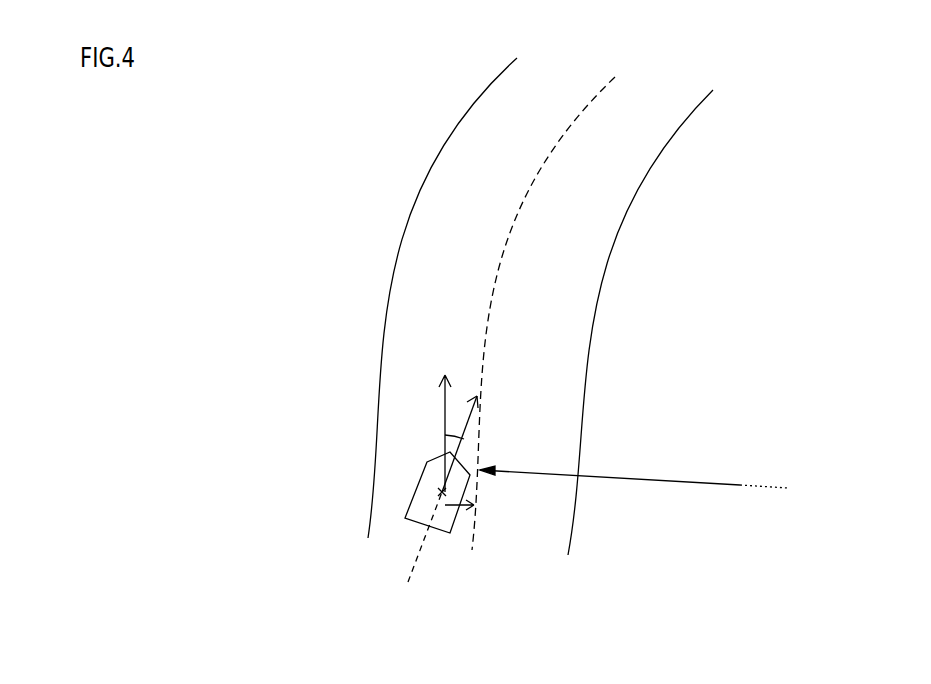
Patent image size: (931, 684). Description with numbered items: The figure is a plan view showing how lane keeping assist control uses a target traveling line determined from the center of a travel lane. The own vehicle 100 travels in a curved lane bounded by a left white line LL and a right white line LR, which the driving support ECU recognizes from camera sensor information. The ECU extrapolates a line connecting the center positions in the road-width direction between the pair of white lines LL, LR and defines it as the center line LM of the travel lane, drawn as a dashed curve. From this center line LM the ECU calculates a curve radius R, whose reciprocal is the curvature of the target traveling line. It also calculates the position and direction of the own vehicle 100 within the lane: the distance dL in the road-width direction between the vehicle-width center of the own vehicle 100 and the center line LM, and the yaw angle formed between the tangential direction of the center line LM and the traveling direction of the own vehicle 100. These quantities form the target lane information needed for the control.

The left white line LL is at (380, 386).
The center line of the travel lane LM is at (510, 233).
The right white line LR is at (585, 386).
The own vehicle 100 is at (410, 497).
The distance in the road-width direction dL is at (466, 508).
The curve radius R is at (634, 491).